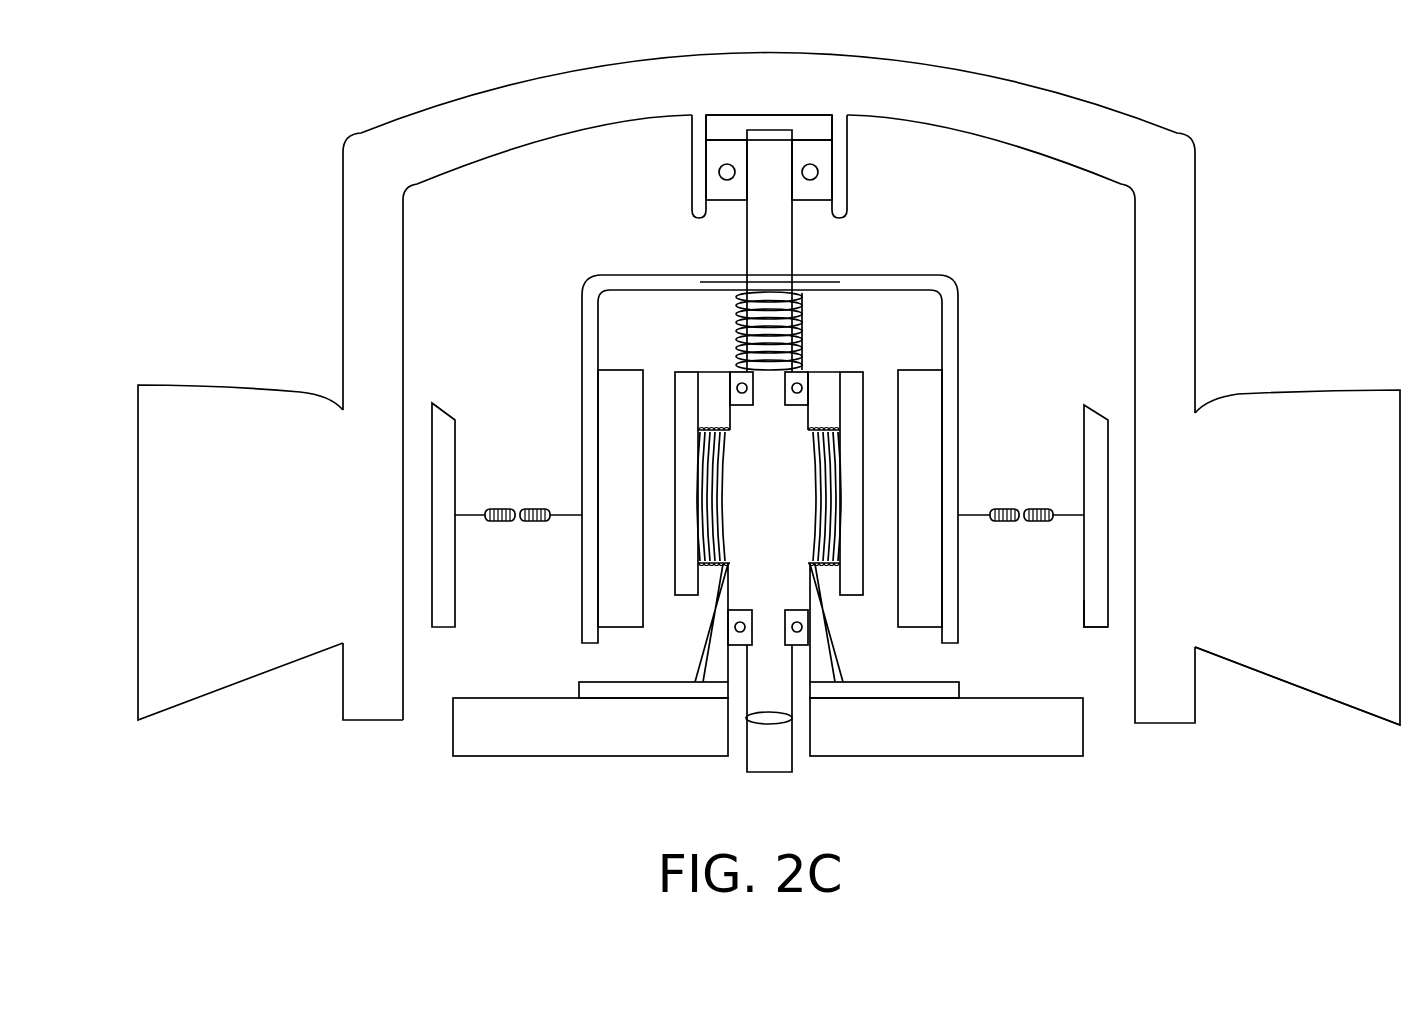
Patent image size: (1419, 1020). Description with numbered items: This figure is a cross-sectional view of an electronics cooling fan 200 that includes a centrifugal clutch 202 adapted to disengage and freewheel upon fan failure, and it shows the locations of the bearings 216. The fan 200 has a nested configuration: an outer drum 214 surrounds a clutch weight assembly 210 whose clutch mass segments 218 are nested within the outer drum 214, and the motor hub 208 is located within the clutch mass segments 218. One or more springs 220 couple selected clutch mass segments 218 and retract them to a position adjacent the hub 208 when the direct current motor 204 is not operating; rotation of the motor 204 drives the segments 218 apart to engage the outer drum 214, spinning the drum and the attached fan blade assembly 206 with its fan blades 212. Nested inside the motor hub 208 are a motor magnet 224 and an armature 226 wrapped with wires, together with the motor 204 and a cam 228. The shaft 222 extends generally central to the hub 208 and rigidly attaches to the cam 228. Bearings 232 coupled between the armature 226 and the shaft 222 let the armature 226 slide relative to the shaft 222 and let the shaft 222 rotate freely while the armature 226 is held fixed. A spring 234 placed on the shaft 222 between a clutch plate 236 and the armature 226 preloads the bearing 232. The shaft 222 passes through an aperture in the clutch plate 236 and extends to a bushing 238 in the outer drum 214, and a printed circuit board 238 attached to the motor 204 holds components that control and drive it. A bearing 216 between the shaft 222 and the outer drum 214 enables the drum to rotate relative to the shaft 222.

The electronics cooling fan 200 is at (1263, 211).
The centrifugal clutch 202 is at (1104, 736).
The direct current motor 204 is at (730, 552).
The fan blade assembly 206 is at (1200, 652).
The hub 208 is at (588, 300).
The clutch weight assembly 210 is at (1092, 630).
The fan blades 212 is at (176, 395).
The outer drum 214 is at (1190, 345).
The bearing system 216 is at (817, 147).
The clutch mass segments 218 is at (447, 457).
The springs 220 is at (503, 518).
The shaft 222 is at (755, 253).
The motor magnet 224 is at (610, 580).
The armature 226 is at (807, 447).
The cam 228 is at (743, 350).
The bearings 232 is at (792, 378).
The spring 234 is at (800, 335).
The clutch plate 236 is at (808, 276).
The printed circuit board 238 is at (975, 757).